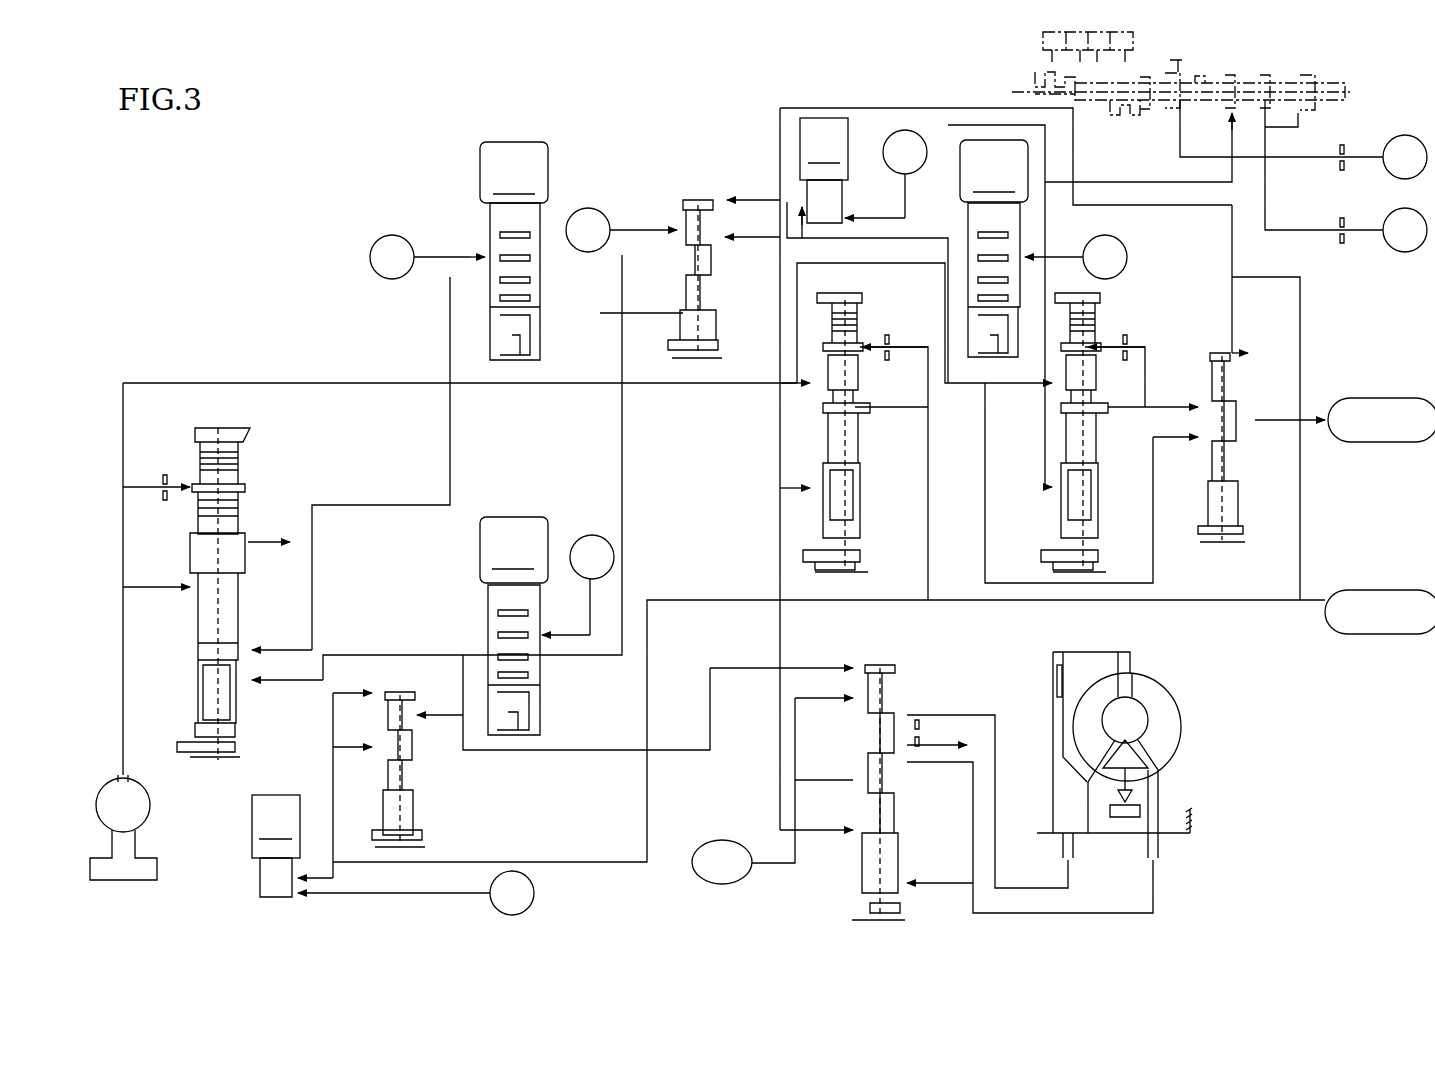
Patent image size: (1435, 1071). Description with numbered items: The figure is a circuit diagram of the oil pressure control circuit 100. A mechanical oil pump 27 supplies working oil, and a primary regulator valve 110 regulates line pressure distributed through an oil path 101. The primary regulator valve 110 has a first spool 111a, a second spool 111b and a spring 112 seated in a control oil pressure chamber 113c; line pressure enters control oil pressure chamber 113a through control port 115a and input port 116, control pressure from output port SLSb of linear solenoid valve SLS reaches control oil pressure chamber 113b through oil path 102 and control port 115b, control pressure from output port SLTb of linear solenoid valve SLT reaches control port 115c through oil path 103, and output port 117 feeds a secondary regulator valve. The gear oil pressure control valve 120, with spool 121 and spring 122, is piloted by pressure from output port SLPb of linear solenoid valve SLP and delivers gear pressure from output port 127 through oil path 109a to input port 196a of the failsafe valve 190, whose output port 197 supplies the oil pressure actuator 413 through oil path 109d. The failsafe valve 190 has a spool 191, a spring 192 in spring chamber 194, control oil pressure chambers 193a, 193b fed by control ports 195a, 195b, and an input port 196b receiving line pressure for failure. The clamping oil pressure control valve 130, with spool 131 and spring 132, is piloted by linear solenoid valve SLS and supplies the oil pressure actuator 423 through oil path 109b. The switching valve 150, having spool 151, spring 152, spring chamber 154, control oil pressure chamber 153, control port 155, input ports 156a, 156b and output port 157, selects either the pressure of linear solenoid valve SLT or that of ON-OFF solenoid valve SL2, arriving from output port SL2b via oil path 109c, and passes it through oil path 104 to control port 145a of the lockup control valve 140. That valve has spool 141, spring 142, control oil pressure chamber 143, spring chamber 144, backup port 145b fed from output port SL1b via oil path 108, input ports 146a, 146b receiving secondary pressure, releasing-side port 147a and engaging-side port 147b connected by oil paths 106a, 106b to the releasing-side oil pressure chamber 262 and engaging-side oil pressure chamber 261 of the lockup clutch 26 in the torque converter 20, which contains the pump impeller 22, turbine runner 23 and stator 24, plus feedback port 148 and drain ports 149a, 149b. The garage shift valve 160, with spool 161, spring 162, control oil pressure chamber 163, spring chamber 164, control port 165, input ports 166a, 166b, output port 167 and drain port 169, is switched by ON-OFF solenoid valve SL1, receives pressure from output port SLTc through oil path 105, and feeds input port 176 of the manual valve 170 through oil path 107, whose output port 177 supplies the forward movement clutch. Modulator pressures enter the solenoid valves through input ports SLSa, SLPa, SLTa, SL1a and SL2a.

The oil pressure control circuit 100 is at (305, 124).
The oil path 101 is at (350, 383).
The oil path 102 is at (350, 505).
The oil path 103 is at (252, 720).
The oil path 104 is at (565, 750).
The oil path 105 is at (622, 435).
The oil path 106a is at (995, 745).
The oil path 106b is at (1080, 913).
The oil path 107 is at (898, 243).
The oil path 108 is at (780, 567).
The oil path 109a is at (1145, 405).
The oil path 109b is at (1235, 605).
The oil path 109c is at (600, 866).
The oil path 109d is at (1305, 425).
The primary regulator valve 110 is at (198, 428).
The first spool 111a is at (240, 610).
The second spool 111b is at (200, 680).
The spring 112 is at (200, 715).
The control oil pressure chamber 113a is at (205, 492).
The control oil pressure chamber 113b is at (200, 645).
The control oil pressure chamber 113c is at (245, 665).
The control port 115a is at (192, 478).
The control port 115b is at (240, 635).
The control port 115c is at (242, 688).
The input port 116 is at (190, 592).
The output port 117 is at (245, 530).
The gear oil pressure control valve 120 is at (1100, 310).
The spool 121 is at (1098, 450).
The spring 122 is at (1098, 520).
The output port 127 is at (1105, 398).
The clamping oil pressure control valve 130 is at (860, 293).
The spool 131 is at (860, 452).
The spring 132 is at (860, 522).
The lockup control valve 140 is at (875, 663).
The spool 141 is at (898, 805).
The spring 142 is at (898, 845).
The control oil pressure chamber 143 is at (895, 675).
The spring chamber 144 is at (862, 848).
The control port 145a is at (865, 675).
The backup port 145b is at (862, 818).
The input port 146a is at (865, 705).
The input port 146b is at (862, 775).
The releasing-side port 147a is at (900, 700).
The engaging-side port 147b is at (900, 780).
The feedback port 148 is at (905, 878).
The drain port 149a is at (905, 725).
The drain port 149b is at (905, 765).
The switching valve 150 is at (398, 690).
The spool 151 is at (388, 792).
The spring 152 is at (412, 772).
The control oil pressure chamber 153 is at (385, 697).
The spring chamber 154 is at (415, 815).
The control port 155 is at (388, 705).
The input port 156a is at (418, 718).
The input port 156b is at (388, 762).
The output port 157 is at (412, 750).
The garage shift valve 160 is at (695, 195).
The spool 161 is at (685, 280).
The spring 162 is at (712, 290).
The control oil pressure chamber 163 is at (683, 205).
The spring chamber 164 is at (712, 330).
The control port 165 is at (715, 210).
The input port 166a is at (683, 232).
The input port 166b is at (685, 262).
The output port 167 is at (715, 252).
The drain port 169 is at (685, 318).
The manual valve 170 is at (1320, 83).
The input port 176 is at (1222, 113).
The output port 177 is at (1262, 113).
The failsafe valve 190 is at (1222, 352).
The spool 191 is at (1240, 470).
The spring 192 is at (1208, 475).
The control oil pressure chamber 193a is at (1250, 360).
The control oil pressure chamber 193b is at (1240, 400).
The spring chamber 194 is at (1208, 508).
The control port 195a is at (1245, 352).
The control port 195b is at (1250, 380).
The input port 196a is at (1208, 400).
The input port 196b is at (1208, 448).
The output port 197 is at (1240, 432).
The torque converter 20 is at (1123, 751).
The pump impeller 22 is at (1180, 695).
The turbine runner 23 is at (1130, 665).
The stator 24 is at (1150, 745).
The lockup clutch 26 is at (1057, 683).
The engaging-side oil pressure chamber 261 is at (1063, 660).
The releasing-side oil pressure chamber 262 is at (1063, 795).
The mechanical oil pump 27 is at (150, 805).
The oil pressure actuator 413 is at (1390, 398).
The oil pressure actuator 423 is at (1390, 590).
The linear solenoid valve SLS is at (514, 251).
The input port SLSa is at (483, 250).
The output port SLSb is at (483, 282).
The linear solenoid valve SLP is at (994, 248).
The input port SLPa is at (1025, 250).
The output port SLPb is at (1025, 268).
The linear solenoid valve SLT is at (514, 626).
The input port SLTa is at (542, 632).
The output port SLTb is at (485, 650).
The output port SLTc is at (545, 665).
The ON-OFF solenoid valve SL1 is at (824, 170).
The input port SL1a is at (843, 215).
The output port SL1b is at (805, 230).
The ON-OFF solenoid valve SL2 is at (276, 846).
The input port SL2a is at (300, 900).
The output port SL2b is at (305, 888).